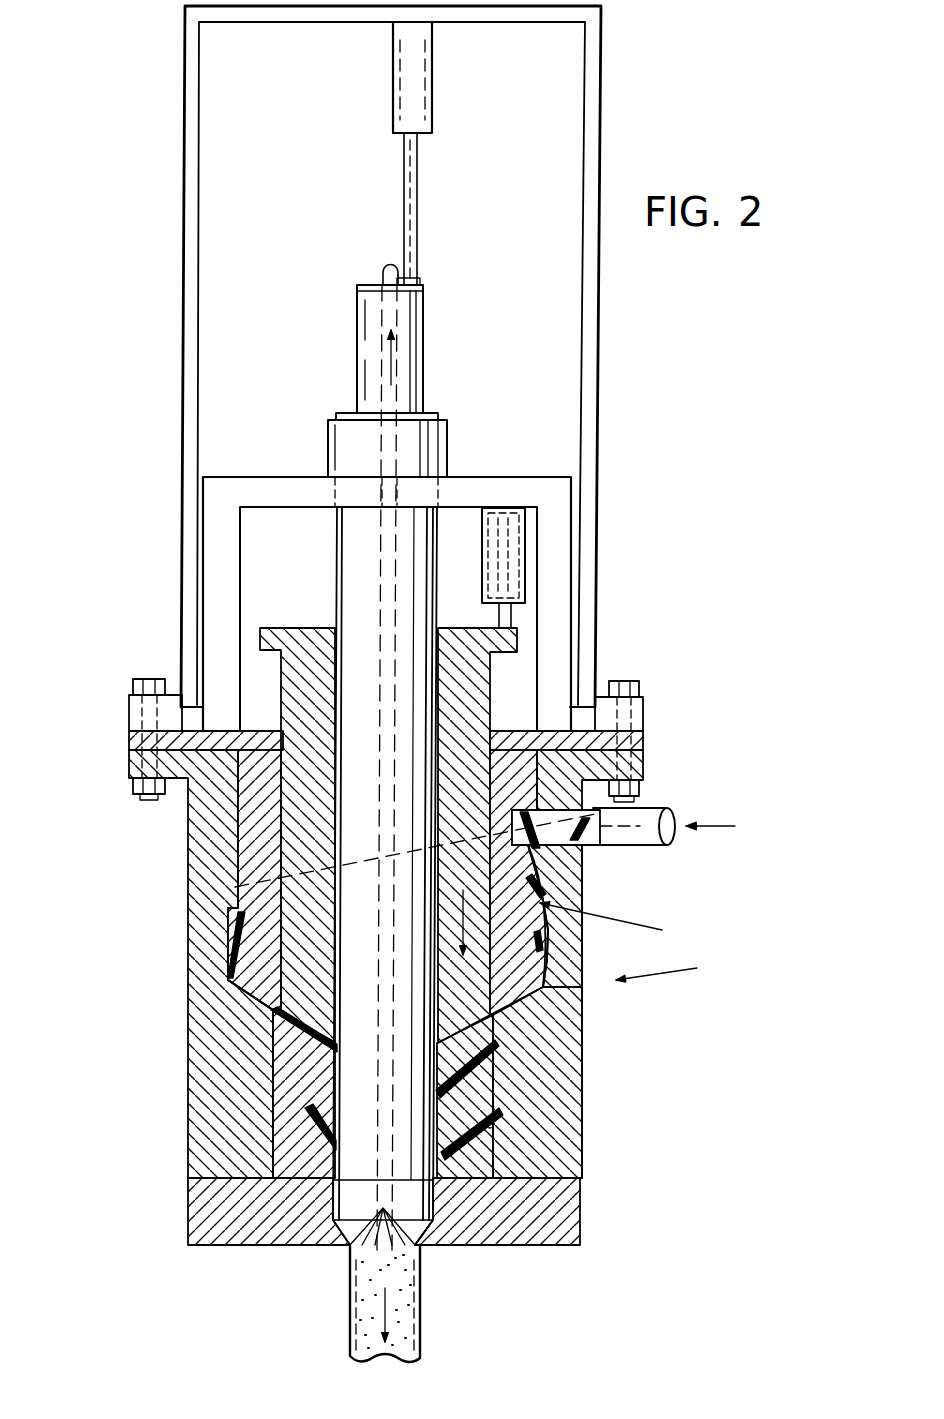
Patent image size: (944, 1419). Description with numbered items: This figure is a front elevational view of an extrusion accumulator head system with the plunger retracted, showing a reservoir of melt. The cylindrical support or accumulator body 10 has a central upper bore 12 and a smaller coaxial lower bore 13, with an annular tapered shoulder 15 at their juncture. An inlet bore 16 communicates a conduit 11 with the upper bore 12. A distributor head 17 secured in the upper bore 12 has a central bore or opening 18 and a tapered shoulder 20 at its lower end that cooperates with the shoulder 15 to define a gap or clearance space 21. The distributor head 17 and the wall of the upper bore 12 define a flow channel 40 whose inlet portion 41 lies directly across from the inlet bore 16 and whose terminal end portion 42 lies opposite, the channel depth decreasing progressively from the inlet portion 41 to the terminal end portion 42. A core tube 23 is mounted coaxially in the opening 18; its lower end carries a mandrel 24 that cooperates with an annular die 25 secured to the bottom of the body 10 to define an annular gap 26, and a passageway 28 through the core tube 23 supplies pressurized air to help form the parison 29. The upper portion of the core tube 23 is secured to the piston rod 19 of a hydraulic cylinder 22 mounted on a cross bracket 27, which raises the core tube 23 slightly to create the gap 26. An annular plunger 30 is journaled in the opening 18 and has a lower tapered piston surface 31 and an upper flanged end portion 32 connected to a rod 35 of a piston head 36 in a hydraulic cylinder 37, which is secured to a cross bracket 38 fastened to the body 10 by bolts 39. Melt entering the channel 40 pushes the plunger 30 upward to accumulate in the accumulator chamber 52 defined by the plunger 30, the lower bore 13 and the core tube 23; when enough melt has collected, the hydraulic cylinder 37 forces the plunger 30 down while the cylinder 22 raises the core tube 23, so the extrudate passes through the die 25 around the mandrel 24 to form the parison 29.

The accumulator body 10 is at (658, 1011).
The conduit 11 is at (660, 847).
The upper bore 12 is at (537, 867).
The lower bore 13 is at (494, 1126).
The annular tapered shoulder 15 is at (523, 995).
The inlet bore 16 is at (597, 822).
The distributor head 17 is at (236, 853).
The central bore 18 is at (280, 812).
The piston rod 19 is at (411, 205).
The annular tapered shoulder 20 is at (290, 1000).
The gap 21 is at (281, 1006).
The hydraulic cylinder 22 is at (420, 91).
The core tube 23 is at (348, 537).
The mandrel 24 is at (418, 1205).
The annular die 25 is at (240, 1230).
The annular gap 26 is at (437, 1247).
The cross bracket 27 is at (588, 306).
The passageway 28 is at (388, 590).
The parison 29 is at (350, 1328).
The annular plunger 30 is at (483, 700).
The tapered annular piston surface 31 is at (289, 1047).
The upper flanged end portion 32 is at (267, 640).
The rod 35 is at (505, 618).
The piston head 36 is at (522, 525).
The hydraulic cylinder 37 is at (520, 568).
The cross bracket 38 is at (527, 487).
The bolts 39 is at (133, 679).
The flow channel 40 is at (619, 925).
The inlet portion 41 is at (577, 843).
The terminal end portion 42 is at (234, 928).
The accumulator chamber 52 is at (467, 1163).